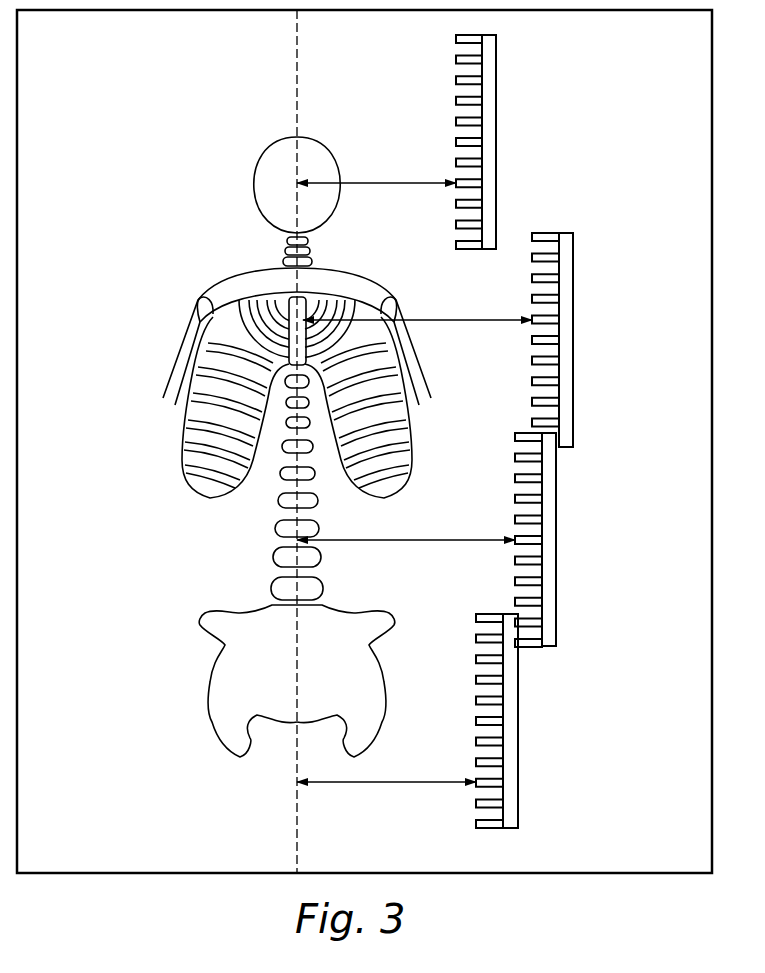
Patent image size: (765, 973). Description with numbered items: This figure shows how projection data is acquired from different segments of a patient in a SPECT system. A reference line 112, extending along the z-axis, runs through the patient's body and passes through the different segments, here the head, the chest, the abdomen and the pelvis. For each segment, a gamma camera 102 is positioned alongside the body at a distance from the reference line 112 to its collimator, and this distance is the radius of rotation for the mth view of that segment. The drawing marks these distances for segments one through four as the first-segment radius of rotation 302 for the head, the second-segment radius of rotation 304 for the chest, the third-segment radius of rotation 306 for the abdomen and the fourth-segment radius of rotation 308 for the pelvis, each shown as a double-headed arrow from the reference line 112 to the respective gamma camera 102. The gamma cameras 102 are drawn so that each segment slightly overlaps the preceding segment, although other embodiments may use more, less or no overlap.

The reference line 112 is at (297, 88).
The gamma cameras 102 is at (496, 127).
The ROR 1,m 302 is at (388, 183).
The ROR 2,m 304 is at (430, 322).
The ROR 3,m 306 is at (397, 541).
The ROR 4,m 308 is at (390, 783).